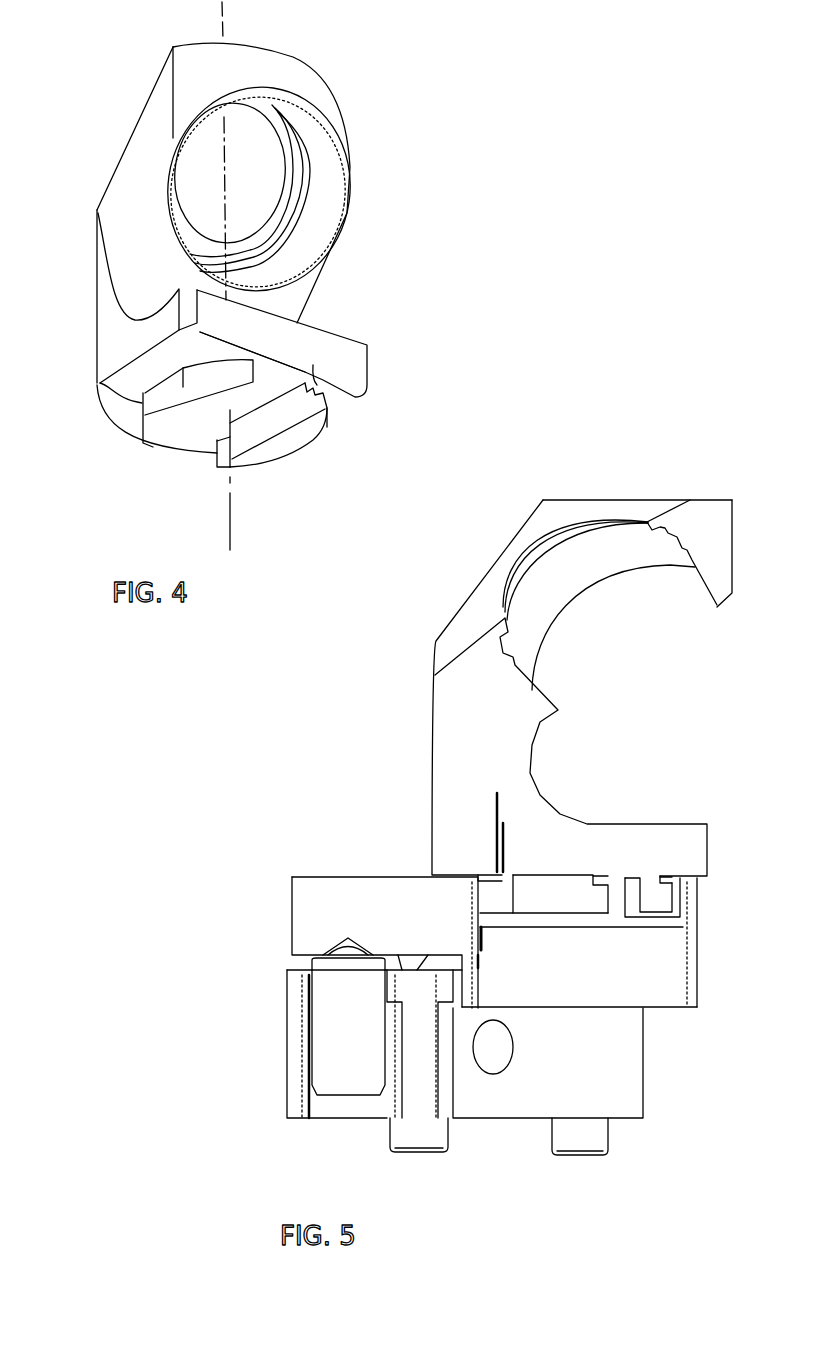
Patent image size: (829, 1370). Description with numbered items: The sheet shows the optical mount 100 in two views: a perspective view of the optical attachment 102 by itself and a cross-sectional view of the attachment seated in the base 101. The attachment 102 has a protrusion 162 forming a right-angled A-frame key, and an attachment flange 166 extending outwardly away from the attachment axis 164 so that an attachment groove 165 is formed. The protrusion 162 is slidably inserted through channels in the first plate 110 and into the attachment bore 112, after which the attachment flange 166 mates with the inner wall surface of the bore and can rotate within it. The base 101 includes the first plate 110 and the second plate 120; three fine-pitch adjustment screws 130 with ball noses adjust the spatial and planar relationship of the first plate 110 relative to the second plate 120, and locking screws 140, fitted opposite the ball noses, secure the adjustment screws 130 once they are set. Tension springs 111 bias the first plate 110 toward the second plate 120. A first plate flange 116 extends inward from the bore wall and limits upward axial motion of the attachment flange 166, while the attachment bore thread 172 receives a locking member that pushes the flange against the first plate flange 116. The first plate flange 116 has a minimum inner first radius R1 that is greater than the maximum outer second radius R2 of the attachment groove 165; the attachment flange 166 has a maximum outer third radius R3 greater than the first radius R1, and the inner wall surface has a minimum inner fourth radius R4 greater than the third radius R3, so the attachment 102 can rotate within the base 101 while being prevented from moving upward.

In FIG. 5, the optical mount 100 is at (710, 427).
In FIG. 5, the base 101 is at (271, 844).
In FIG. 4, the optical attachment 102 is at (348, 47).
In FIG. 5, the optical attachment 102 is at (739, 489).
In FIG. 5, the first plate 110 is at (300, 908).
In FIG. 5, the tension springs 111 is at (430, 965).
In FIG. 5, the attachment bore 112 is at (604, 1012).
In FIG. 5, the first plate flange 116 is at (617, 853).
In FIG. 5, the second plate 120 is at (295, 1032).
In FIG. 5, the adjustment screws 130 is at (330, 1070).
In FIG. 5, the locking screws 140 is at (423, 1110).
In FIG. 4, the protrusion 162 is at (139, 435).
In FIG. 5, the protrusion 162 is at (490, 897).
In FIG. 4, the attachment axis 164 is at (232, 527).
In FIG. 4, the attachment groove 165 is at (313, 377).
In FIG. 4, the attachment flange 166 is at (100, 383).
In FIG. 5, the attachment bore thread 172 is at (667, 973).
In FIG. 5, the first radius R1 is at (500, 802).
In FIG. 5, the second radius R2 is at (506, 830).
In FIG. 5, the third radius R3 is at (484, 940).
In FIG. 5, the fourth radius R4 is at (481, 961).